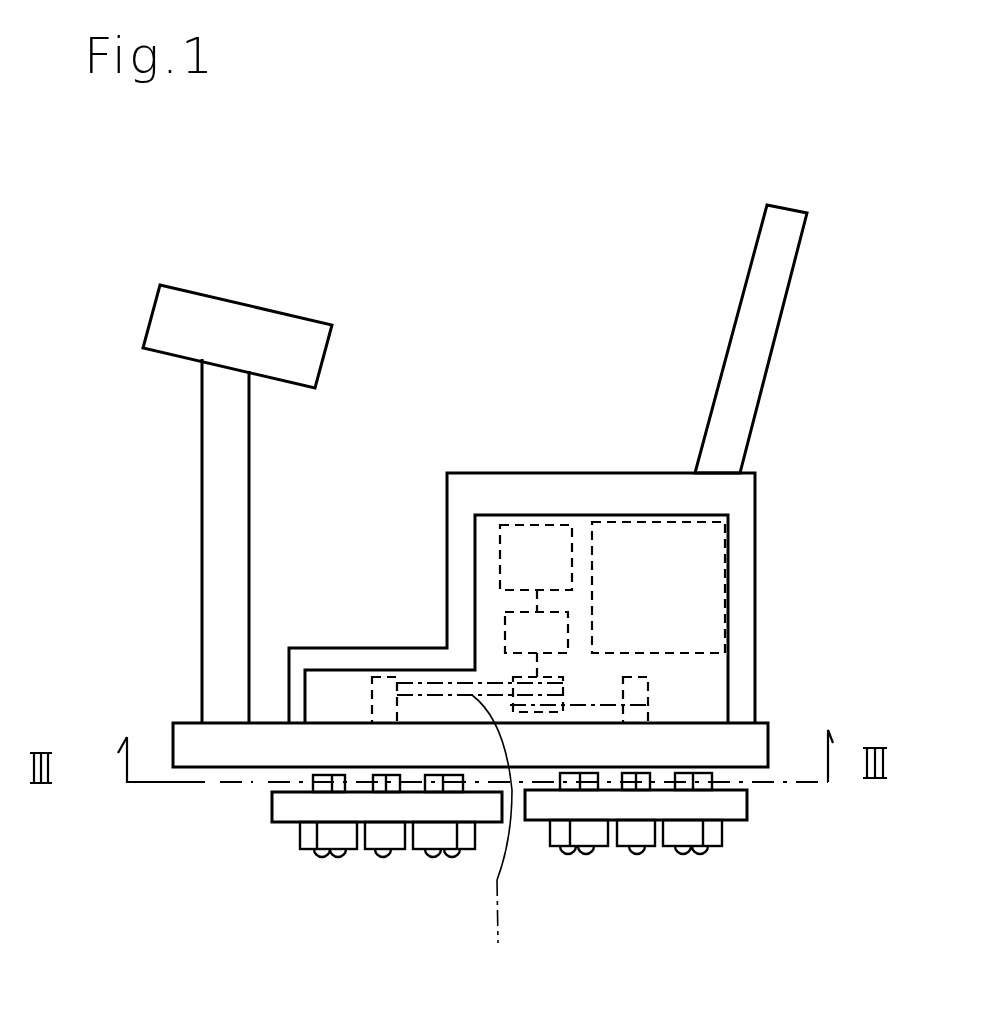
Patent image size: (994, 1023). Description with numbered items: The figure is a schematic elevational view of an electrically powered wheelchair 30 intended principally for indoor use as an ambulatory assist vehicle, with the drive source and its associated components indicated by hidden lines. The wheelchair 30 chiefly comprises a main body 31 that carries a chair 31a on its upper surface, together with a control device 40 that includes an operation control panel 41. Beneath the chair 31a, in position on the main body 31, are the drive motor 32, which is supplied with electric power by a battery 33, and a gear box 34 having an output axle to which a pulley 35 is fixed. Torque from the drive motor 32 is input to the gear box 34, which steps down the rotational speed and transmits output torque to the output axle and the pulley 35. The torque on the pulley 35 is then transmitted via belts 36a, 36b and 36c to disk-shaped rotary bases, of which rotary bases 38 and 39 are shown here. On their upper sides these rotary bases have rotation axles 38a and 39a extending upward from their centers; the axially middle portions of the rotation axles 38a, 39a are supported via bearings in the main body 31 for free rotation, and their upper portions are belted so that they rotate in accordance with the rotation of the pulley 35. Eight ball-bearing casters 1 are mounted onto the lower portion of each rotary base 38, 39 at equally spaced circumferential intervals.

The ball-bearing casters 1 is at (378, 840).
The wheelchair 30 is at (545, 255).
The main body 31 is at (188, 738).
The chair 31a is at (643, 480).
The drive motor 32 is at (533, 525).
The battery 33 is at (687, 658).
The gear box 34 is at (507, 612).
The pulley 35 is at (513, 677).
The belt 36a is at (432, 683).
The belt 36b is at (504, 840).
The belt 36c is at (577, 702).
The rotary base 38 is at (268, 807).
The rotation axle 38a is at (360, 682).
The rotary base 39 is at (747, 803).
The rotation axle 39a is at (633, 673).
The control device 40 is at (200, 293).
The operation control panel 41 is at (293, 337).